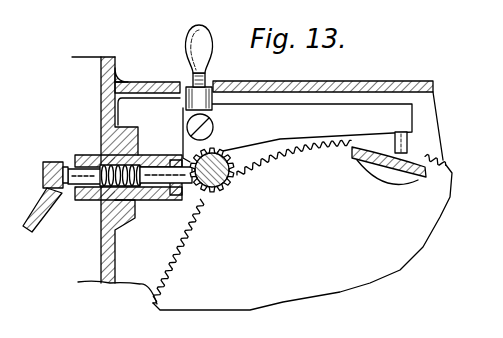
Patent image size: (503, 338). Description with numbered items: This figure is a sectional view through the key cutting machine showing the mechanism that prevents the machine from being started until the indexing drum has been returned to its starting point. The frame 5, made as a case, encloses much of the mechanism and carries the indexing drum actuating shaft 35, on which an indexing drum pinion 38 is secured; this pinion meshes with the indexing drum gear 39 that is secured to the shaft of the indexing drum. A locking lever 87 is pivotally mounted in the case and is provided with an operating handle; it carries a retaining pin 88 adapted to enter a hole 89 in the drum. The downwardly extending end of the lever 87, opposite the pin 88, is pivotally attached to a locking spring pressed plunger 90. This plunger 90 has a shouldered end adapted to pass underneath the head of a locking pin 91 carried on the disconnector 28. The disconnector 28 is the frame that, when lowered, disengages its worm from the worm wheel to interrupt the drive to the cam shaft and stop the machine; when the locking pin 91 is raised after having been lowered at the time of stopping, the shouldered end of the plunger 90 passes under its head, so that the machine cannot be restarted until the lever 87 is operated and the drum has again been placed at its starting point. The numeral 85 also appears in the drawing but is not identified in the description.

The frame 5 is at (115, 257).
The disconnector frame 28 is at (37, 218).
The indexing drum actuating shaft 35 is at (227, 181).
The indexing drum pinion 38 is at (240, 165).
The indexing drum gear 39 is at (403, 247).
The lever 85 is at (28, 137).
The locking lever 87 is at (330, 122).
The pin 88 is at (408, 141).
The hole 89 is at (397, 168).
The locking spring pressed plunger 90 is at (179, 182).
The locking pin 91 is at (67, 163).